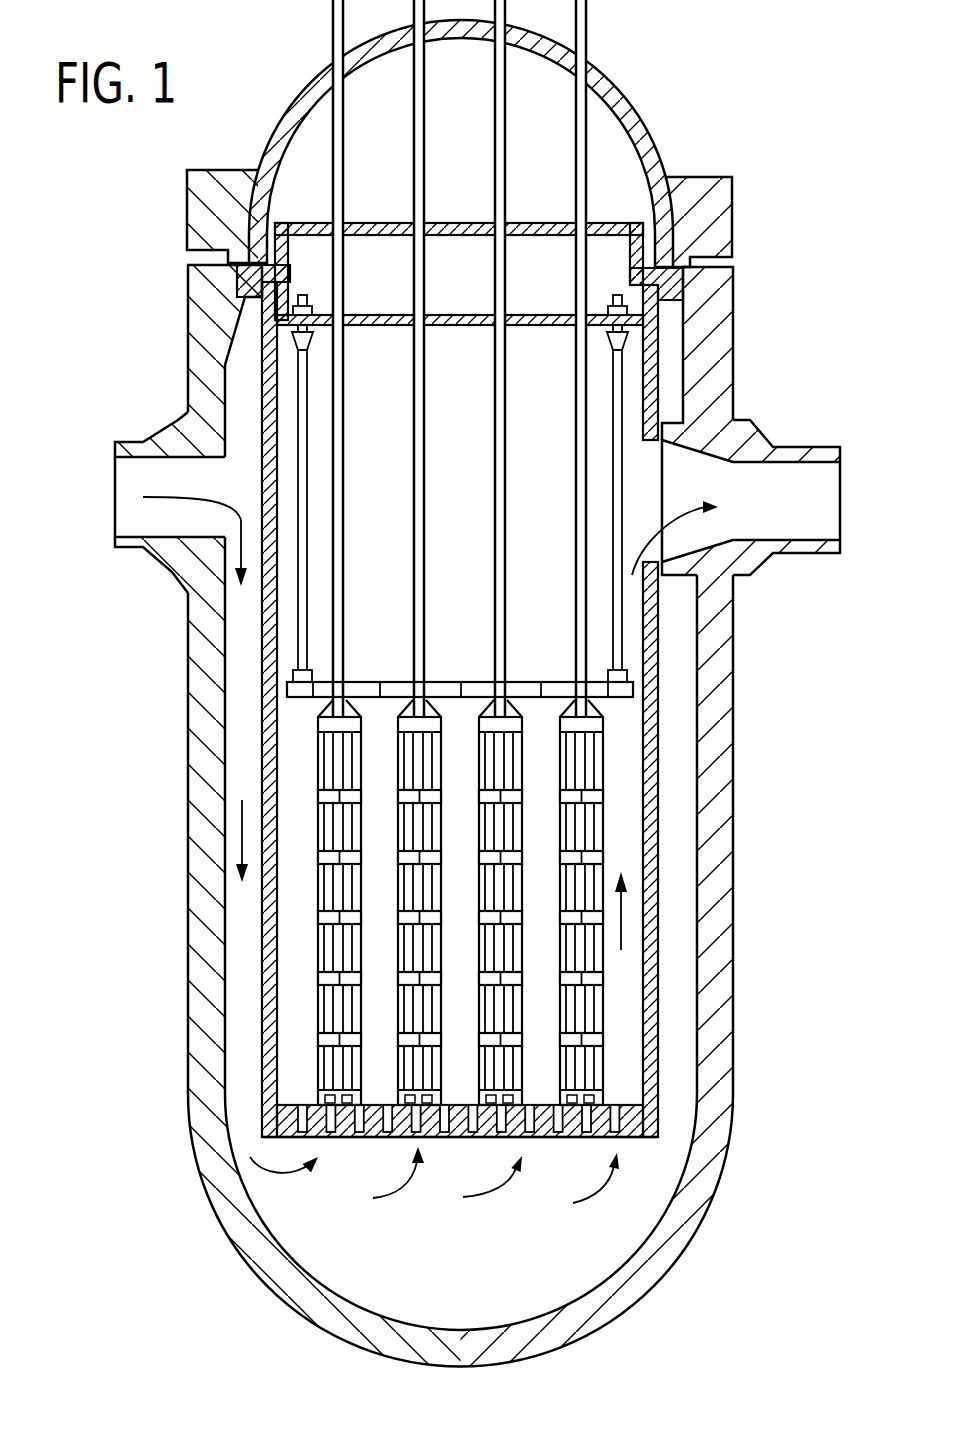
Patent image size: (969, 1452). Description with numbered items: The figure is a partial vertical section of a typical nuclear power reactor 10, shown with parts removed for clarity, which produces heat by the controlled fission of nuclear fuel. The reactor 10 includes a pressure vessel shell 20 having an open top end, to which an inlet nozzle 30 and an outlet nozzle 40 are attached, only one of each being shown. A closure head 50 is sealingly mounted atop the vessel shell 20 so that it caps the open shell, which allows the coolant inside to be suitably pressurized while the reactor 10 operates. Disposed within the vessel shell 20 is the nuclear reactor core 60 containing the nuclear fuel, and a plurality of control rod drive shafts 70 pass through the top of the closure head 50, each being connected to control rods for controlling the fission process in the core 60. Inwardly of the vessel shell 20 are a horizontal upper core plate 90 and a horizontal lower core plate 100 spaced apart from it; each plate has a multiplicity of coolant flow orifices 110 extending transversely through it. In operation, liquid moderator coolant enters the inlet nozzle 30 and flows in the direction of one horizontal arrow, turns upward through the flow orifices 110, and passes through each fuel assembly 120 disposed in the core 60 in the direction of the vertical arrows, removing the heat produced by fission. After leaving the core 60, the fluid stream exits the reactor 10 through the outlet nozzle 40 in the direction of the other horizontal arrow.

The nuclear power reactor 10 is at (700, 108).
The pressure vessel shell 20 is at (722, 338).
The inlet nozzle 30 is at (142, 443).
The outlet nozzle 40 is at (803, 450).
The closure head 50 is at (713, 220).
The nuclear reactor core 60 is at (625, 813).
The control rod drive shaft 70 is at (500, 500).
The upper core plate 90 is at (622, 690).
The lower core plate 100 is at (658, 1138).
The coolant flow orifice 110 is at (382, 681).
The fuel assembly 120 is at (625, 1020).